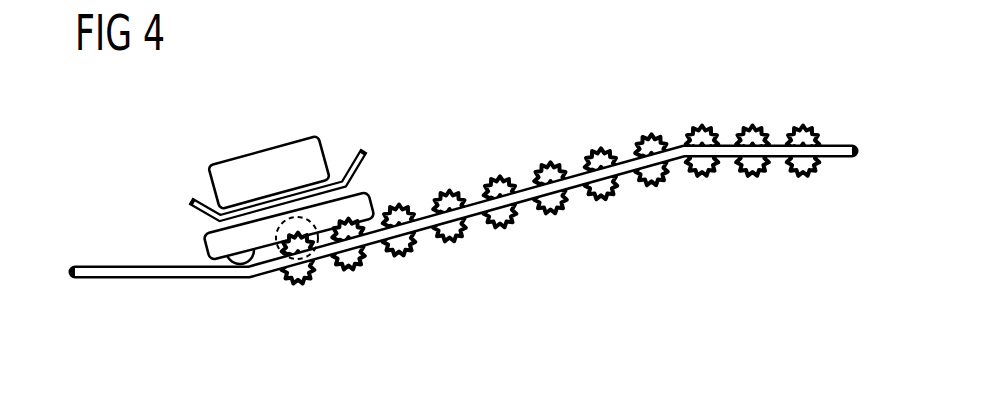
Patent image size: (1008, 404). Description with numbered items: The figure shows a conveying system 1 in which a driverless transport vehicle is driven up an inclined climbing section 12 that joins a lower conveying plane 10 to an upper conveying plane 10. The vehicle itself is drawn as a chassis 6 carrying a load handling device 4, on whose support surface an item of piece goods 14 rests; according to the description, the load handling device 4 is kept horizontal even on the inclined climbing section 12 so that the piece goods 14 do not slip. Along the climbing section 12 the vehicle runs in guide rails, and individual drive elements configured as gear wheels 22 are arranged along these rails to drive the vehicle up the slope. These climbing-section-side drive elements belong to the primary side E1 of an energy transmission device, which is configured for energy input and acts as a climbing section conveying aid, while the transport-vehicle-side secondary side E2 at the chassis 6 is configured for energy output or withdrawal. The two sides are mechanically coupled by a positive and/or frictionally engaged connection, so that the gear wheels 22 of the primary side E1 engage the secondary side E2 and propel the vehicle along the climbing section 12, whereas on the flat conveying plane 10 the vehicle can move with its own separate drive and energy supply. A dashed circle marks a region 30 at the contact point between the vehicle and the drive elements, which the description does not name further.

The conveying system 1 is at (176, 138).
The item of piece goods 14 is at (258, 152).
The load handling device 4 is at (365, 150).
The chassis 6 is at (371, 227).
The secondary side E2 is at (220, 242).
The gear wheels 22 is at (551, 220).
The primary side E1 is at (360, 256).
The climbing section 12 is at (683, 341).
The conveying plane 10 is at (245, 325).
The contact region 30 is at (253, 268).